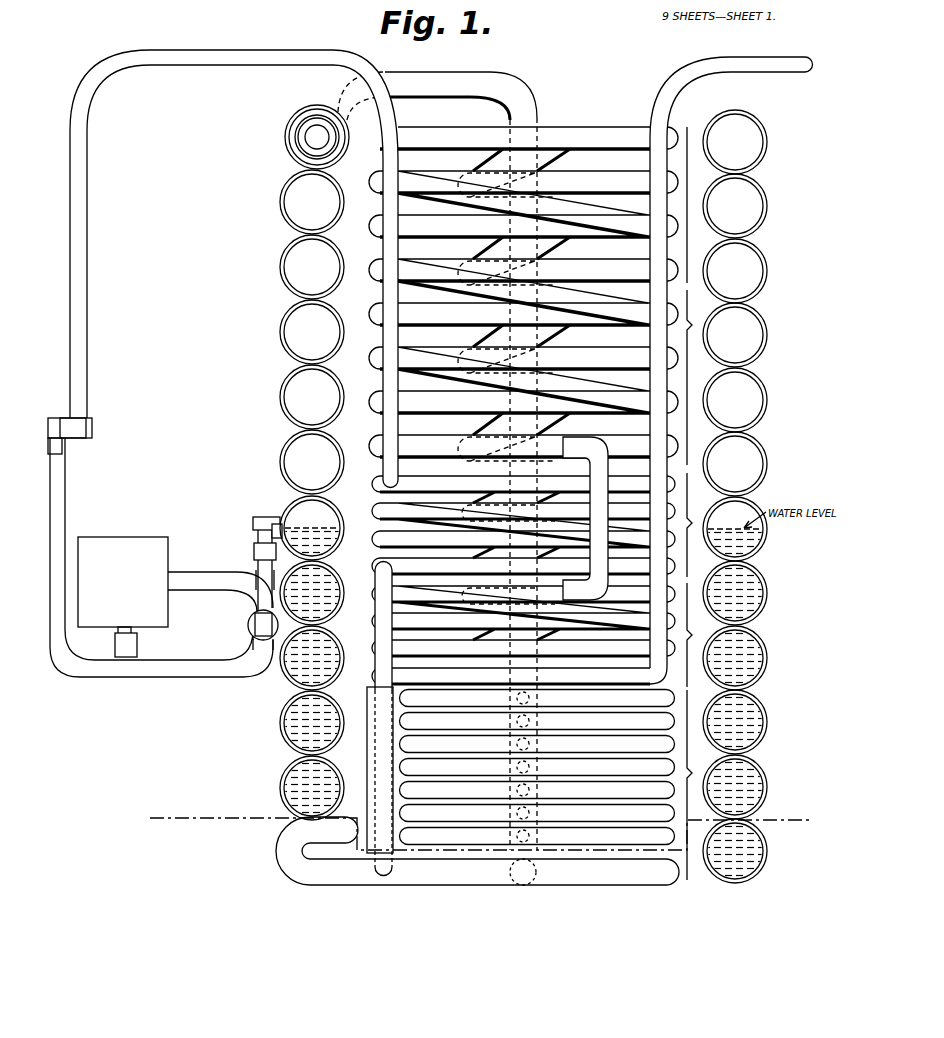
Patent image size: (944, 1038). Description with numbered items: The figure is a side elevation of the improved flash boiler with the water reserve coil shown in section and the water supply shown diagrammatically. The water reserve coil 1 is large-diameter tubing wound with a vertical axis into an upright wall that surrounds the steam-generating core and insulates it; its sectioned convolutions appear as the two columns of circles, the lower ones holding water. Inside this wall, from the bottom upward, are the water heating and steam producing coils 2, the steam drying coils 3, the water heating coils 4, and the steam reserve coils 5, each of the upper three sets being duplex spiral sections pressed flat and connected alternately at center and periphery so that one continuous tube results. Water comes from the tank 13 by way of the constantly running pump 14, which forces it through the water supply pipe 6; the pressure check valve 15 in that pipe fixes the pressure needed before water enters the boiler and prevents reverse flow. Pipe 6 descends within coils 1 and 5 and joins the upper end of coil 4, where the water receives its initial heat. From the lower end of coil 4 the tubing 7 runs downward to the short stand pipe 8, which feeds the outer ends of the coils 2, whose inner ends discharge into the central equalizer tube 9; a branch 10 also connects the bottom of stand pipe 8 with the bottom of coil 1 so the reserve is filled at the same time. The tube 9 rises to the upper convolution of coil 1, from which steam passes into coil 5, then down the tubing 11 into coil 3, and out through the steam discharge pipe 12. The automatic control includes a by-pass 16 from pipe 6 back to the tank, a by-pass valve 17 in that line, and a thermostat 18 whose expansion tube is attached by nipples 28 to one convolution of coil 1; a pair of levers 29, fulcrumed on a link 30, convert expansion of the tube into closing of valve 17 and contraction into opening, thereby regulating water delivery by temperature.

The water reserve coil 1 is at (692, 325).
The water heating and steam producing coils 2 is at (692, 773).
The steam drying coils 3 is at (692, 635).
The water heating coils 4 is at (588, 525).
The steam reserve coils 5 is at (687, 283).
The water supply pipe 6 is at (84, 672).
The tubing 7 is at (382, 660).
The stand pipe 8 is at (370, 720).
The equalizer tube 9 is at (530, 825).
The branch 10 is at (340, 876).
The tubing 11 is at (603, 468).
The steam discharge pipe 12 is at (733, 60).
The tank 13 is at (102, 543).
The pump 14 is at (138, 645).
The pressure check valve 15 is at (93, 426).
The by-pass 16 is at (198, 580).
The by-pass valve 17 is at (245, 641).
The thermostat 18 is at (255, 524).
The nipples 28 is at (276, 517).
The levers 29 is at (262, 578).
The link 30 is at (260, 548).